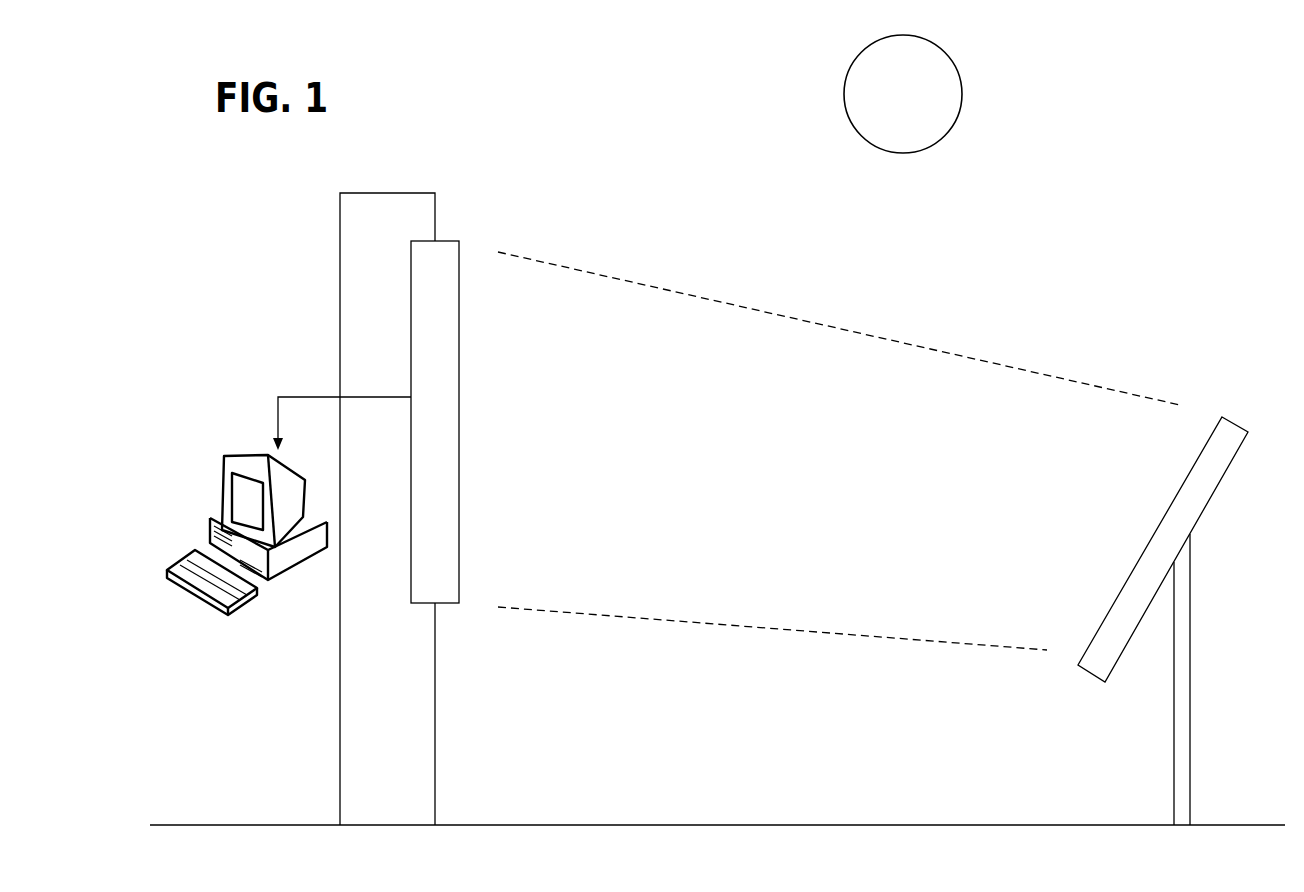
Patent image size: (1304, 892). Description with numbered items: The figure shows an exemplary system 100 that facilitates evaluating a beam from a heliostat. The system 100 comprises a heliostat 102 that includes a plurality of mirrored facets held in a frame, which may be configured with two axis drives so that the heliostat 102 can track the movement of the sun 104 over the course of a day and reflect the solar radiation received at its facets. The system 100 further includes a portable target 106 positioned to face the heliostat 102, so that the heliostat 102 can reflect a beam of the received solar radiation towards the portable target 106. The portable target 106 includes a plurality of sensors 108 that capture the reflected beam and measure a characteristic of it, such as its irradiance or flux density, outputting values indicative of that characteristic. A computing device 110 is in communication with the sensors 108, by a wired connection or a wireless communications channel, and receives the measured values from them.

The system 100 is at (1070, 62).
The heliostat 102 is at (1211, 430).
The sun 104 is at (845, 94).
The portable target 106 is at (340, 258).
The plurality of sensors 108 is at (459, 415).
The computing device 110 is at (248, 457).